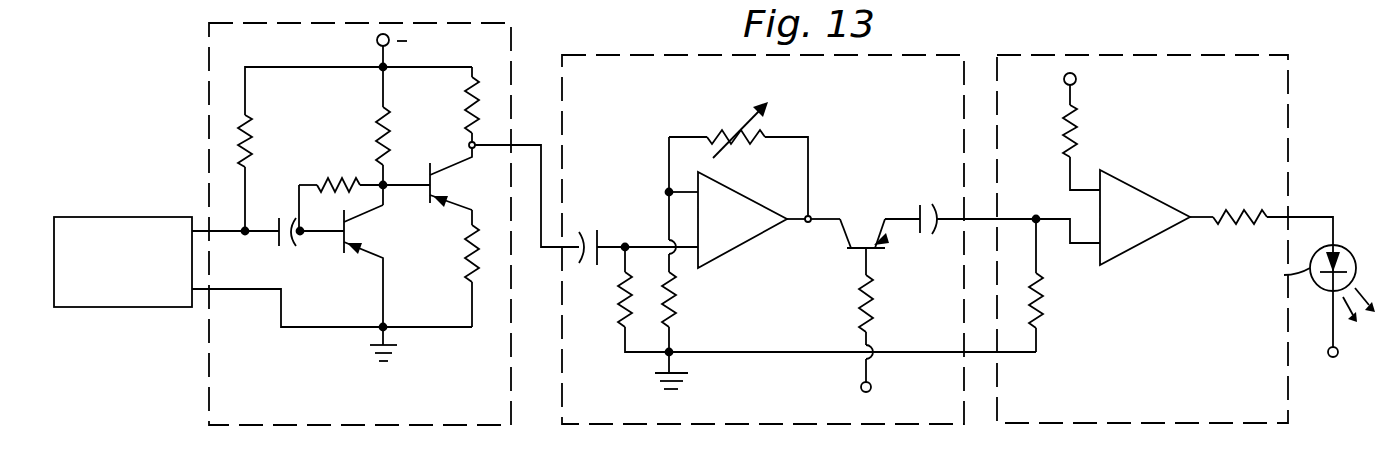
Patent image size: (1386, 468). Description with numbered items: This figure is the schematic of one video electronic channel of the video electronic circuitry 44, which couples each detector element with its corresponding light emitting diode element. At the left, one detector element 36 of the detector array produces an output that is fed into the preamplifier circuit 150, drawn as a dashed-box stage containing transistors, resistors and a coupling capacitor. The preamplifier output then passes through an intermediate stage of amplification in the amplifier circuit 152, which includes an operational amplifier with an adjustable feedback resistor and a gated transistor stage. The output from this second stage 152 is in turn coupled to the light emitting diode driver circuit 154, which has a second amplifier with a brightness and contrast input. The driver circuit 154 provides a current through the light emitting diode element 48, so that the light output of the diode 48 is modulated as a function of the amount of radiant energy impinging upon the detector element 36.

The detector element 36 is at (126, 217).
The video electronic circuitry 44 is at (190, 121).
The preamplifier circuit 150 is at (209, 381).
The amplifier circuit 152 is at (562, 373).
The light emitting diode driver circuit 154 is at (1288, 156).
The light emitting diode element 48 is at (1350, 261).